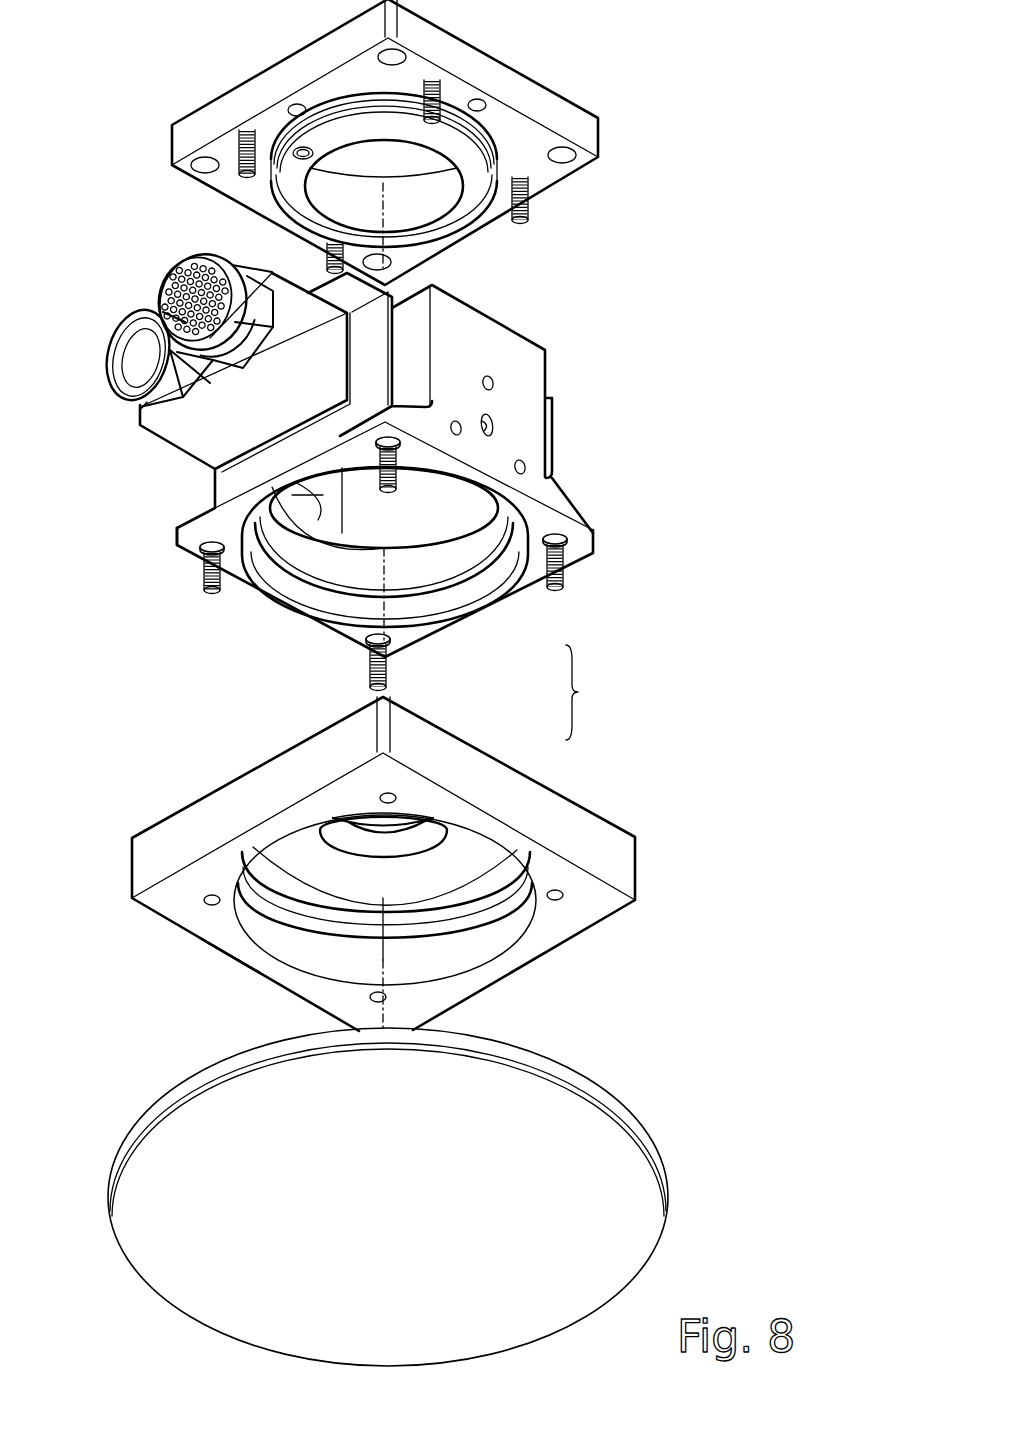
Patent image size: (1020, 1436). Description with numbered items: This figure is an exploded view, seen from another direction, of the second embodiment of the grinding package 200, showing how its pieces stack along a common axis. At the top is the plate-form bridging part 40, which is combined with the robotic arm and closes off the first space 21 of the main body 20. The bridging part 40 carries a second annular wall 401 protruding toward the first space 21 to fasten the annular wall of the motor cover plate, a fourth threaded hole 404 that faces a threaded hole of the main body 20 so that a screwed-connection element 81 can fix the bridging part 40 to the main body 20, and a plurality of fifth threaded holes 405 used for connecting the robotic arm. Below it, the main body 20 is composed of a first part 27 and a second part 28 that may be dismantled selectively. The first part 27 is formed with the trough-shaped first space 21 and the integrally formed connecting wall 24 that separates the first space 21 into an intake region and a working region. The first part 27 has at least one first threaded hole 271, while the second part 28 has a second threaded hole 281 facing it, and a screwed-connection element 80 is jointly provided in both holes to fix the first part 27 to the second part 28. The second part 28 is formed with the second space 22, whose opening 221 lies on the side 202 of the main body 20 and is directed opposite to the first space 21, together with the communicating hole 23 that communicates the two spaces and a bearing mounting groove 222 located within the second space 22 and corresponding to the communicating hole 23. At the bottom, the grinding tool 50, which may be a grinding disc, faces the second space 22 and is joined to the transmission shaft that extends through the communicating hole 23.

The grinding package 200 is at (762, 83).
The bridging part 40 is at (503, 80).
The second annular wall 401 is at (288, 187).
The fourth threaded hole 404 is at (527, 160).
The fifth threaded holes 405 is at (392, 57).
The screwed-connection element 81 is at (527, 200).
The first space 21 is at (470, 490).
The connecting wall 24 is at (323, 495).
The first part 27 is at (450, 632).
The first threaded hole 271 is at (177, 545).
The screwed-connection element 80 is at (200, 577).
The main body 20 is at (588, 692).
The second part 28 is at (467, 740).
The second threaded hole 281 is at (212, 905).
The side of the main body 202 is at (262, 965).
The second space 22 is at (487, 927).
The opening of the second space 221 is at (535, 910).
The bearing mounting groove 222 is at (430, 833).
The communicating hole 23 is at (370, 818).
The grinding tool 50 is at (623, 1148).